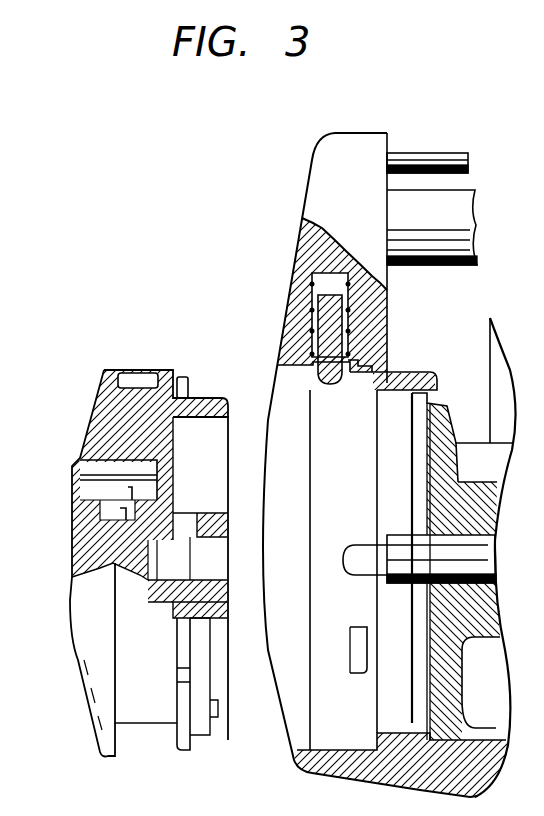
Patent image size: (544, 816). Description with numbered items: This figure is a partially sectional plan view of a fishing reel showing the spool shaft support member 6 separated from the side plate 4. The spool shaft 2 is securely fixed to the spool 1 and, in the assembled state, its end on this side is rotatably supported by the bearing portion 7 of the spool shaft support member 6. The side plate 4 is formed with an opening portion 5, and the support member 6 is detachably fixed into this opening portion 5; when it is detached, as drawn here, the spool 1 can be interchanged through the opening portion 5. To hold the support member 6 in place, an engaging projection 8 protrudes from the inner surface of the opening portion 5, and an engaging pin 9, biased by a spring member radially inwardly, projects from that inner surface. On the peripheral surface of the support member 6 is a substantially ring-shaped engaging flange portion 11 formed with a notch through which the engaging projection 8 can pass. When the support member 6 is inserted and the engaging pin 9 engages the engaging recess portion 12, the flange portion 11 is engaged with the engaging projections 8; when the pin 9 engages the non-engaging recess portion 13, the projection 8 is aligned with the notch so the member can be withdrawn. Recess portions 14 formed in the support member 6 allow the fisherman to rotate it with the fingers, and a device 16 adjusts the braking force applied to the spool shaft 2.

The spool 1 is at (484, 612).
The spool shaft 2 is at (468, 558).
The side plate 4 is at (360, 148).
The opening portion 5 is at (313, 736).
The spool shaft support member 6 is at (137, 710).
The bearing portion 7 is at (186, 556).
The engaging projection 8 is at (345, 380).
The engaging pin 9 is at (346, 376).
The engaging flange portion 11 is at (182, 377).
The engaging recess portion 12 is at (137, 380).
The non-engaging recess portion 13 is at (187, 652).
The recess portions 14 is at (100, 428).
The braking force adjusting device 16 is at (80, 558).